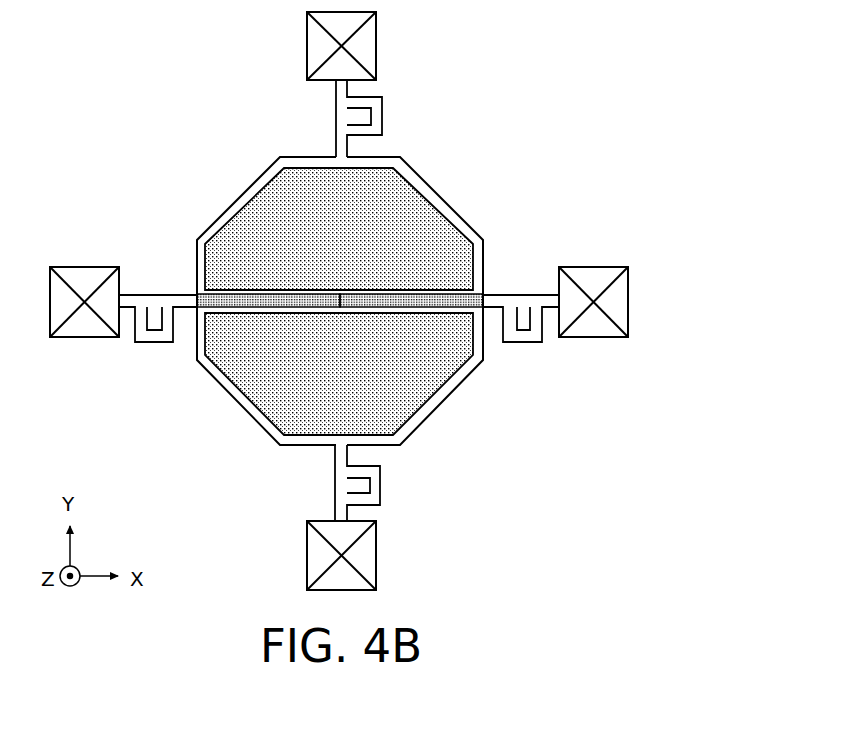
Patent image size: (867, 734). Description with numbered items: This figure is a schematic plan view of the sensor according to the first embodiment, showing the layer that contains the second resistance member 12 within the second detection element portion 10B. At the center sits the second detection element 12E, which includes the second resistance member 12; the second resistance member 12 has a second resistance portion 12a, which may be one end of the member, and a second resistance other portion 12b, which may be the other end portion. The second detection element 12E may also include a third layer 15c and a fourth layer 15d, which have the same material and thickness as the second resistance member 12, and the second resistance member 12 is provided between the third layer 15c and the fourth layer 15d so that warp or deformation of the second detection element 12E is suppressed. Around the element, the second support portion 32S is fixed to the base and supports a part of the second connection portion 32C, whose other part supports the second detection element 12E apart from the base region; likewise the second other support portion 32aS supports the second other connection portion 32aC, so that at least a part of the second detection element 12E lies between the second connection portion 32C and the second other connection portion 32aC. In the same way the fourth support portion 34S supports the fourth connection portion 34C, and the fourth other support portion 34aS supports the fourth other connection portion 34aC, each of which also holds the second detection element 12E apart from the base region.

The second detection element portion 10B is at (541, 150).
The second resistance member 12 is at (228, 302).
The second detection element 12E is at (444, 185).
The second resistance portion 12a is at (197, 306).
The second resistance other portion 12b is at (483, 308).
The third layer 15c is at (257, 338).
The fourth layer 15d is at (262, 250).
The second support portion 32S is at (87, 278).
The second connection portion 32C is at (137, 295).
The second other support portion 32aS is at (601, 276).
The second other connection portion 32aC is at (519, 296).
The fourth support portion 34S is at (366, 558).
The fourth connection portion 34C is at (381, 484).
The fourth other support portion 34aS is at (366, 41).
The fourth other connection portion 34aC is at (382, 115).